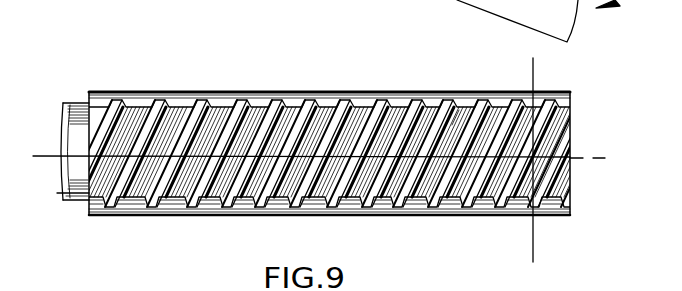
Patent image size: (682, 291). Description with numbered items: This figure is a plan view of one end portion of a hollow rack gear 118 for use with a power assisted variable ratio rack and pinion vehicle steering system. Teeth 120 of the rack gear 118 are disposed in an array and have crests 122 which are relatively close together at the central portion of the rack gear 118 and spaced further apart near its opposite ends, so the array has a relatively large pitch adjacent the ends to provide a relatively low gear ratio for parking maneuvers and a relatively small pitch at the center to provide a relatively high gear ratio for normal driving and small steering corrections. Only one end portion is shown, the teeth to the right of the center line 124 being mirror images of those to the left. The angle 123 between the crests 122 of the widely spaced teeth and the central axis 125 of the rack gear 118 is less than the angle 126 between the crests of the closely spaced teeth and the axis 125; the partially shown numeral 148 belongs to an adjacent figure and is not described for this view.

The rack gear 118 is at (118, 72).
The teeth 120 is at (258, 100).
The crests 122 is at (182, 210).
The angle 123 is at (206, 147).
The center line 124 is at (540, 70).
The central axis 125 is at (583, 158).
The angle 126 is at (462, 114).
The adjacent figure element 148 is at (669, 38).